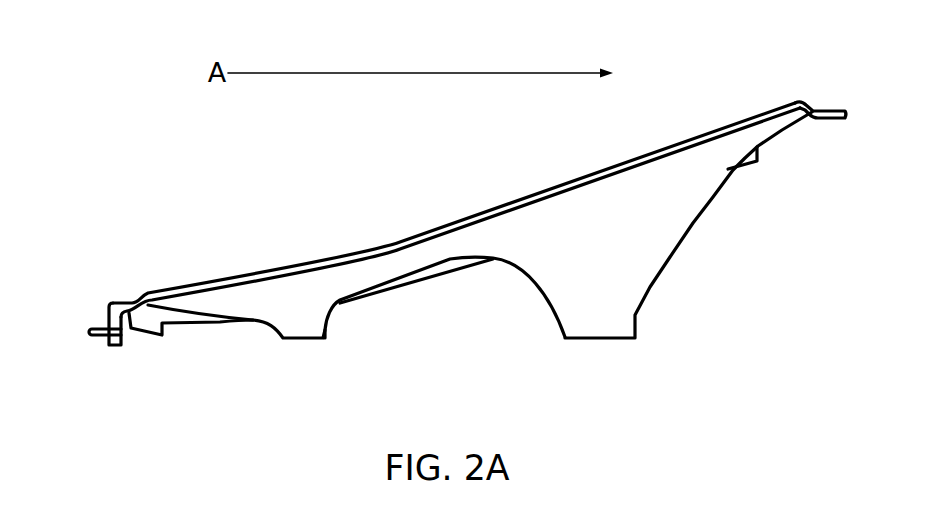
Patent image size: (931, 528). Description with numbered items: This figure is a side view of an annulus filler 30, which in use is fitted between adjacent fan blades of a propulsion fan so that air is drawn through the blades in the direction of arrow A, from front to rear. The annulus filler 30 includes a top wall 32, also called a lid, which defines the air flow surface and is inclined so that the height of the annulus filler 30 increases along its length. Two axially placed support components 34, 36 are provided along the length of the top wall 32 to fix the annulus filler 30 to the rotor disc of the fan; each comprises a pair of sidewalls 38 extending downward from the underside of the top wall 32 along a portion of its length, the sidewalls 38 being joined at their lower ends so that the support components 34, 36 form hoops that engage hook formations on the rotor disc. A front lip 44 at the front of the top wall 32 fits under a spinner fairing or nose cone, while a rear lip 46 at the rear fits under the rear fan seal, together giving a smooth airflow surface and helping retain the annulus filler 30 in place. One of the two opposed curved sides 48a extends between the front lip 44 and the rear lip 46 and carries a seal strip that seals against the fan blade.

The annulus filler 30 is at (268, 172).
The top wall 32 is at (697, 137).
The support component 34 is at (242, 358).
The support component 36 is at (717, 270).
The sidewalls 38 is at (303, 330).
The front lip 44 is at (100, 326).
The rear lip 46 is at (820, 108).
The side 48a is at (512, 222).